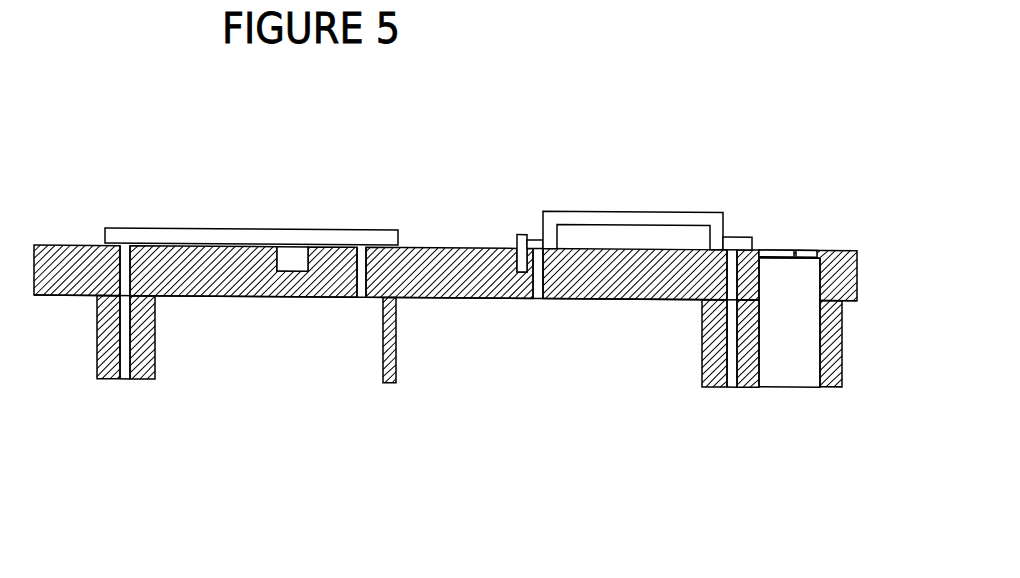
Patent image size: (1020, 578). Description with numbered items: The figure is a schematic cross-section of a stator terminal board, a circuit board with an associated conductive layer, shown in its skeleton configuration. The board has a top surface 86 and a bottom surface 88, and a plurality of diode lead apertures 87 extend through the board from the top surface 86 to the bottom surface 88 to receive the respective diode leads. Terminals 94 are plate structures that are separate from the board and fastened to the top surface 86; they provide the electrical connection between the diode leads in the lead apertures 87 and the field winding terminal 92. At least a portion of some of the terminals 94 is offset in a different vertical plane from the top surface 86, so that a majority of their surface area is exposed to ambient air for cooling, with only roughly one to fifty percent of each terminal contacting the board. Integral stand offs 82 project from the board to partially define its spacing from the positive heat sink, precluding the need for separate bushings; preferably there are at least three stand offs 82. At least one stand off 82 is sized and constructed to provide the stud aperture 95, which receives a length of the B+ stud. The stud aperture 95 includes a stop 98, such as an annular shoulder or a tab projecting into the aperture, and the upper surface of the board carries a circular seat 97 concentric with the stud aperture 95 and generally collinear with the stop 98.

The stand offs 82 is at (145, 347).
The top surface 86 is at (453, 243).
The lead aperture 87 is at (117, 378).
The bottom surface 88 is at (255, 297).
The field winding terminal 92 is at (297, 252).
The terminals 94 is at (162, 240).
The stud aperture 95 is at (758, 365).
The circular seat 97 is at (775, 252).
The stop 98 is at (805, 258).